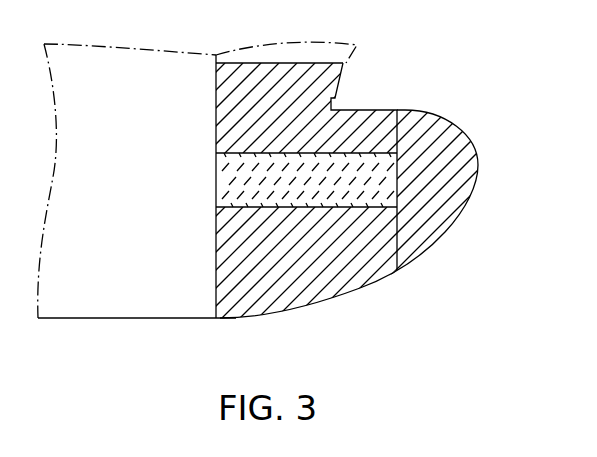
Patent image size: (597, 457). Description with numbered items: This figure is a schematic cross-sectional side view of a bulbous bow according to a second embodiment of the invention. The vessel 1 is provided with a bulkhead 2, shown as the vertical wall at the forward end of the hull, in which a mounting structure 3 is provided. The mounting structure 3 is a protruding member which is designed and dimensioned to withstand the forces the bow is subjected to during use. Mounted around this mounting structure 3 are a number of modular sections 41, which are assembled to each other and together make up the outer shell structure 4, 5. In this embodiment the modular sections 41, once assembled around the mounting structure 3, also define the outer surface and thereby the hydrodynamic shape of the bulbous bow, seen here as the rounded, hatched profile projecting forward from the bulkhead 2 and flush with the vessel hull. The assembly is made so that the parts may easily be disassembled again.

The vessel 1 is at (143, 248).
The bulkhead 2 is at (216, 91).
The mounting structure 3 is at (225, 172).
The outer shell structure 4 is at (293, 298).
The outer shell structure 5 is at (508, 128).
The modular sections 41 is at (334, 100).